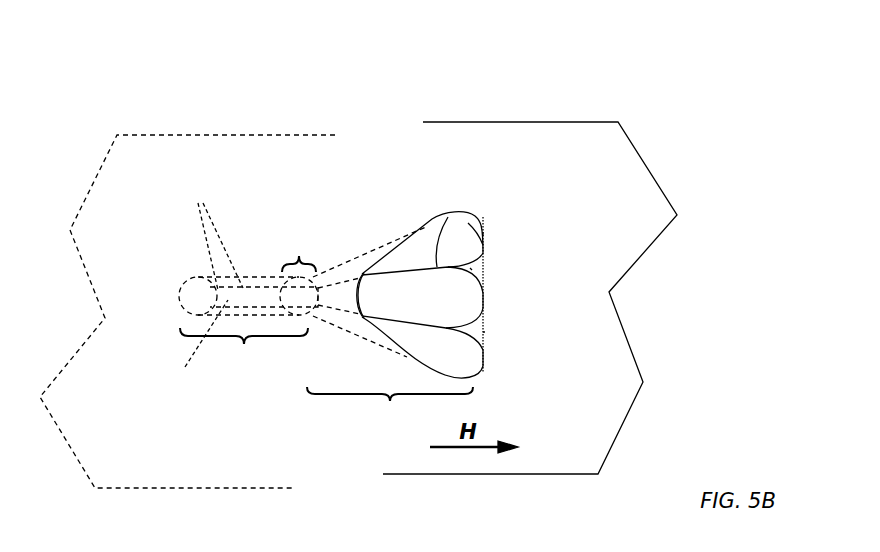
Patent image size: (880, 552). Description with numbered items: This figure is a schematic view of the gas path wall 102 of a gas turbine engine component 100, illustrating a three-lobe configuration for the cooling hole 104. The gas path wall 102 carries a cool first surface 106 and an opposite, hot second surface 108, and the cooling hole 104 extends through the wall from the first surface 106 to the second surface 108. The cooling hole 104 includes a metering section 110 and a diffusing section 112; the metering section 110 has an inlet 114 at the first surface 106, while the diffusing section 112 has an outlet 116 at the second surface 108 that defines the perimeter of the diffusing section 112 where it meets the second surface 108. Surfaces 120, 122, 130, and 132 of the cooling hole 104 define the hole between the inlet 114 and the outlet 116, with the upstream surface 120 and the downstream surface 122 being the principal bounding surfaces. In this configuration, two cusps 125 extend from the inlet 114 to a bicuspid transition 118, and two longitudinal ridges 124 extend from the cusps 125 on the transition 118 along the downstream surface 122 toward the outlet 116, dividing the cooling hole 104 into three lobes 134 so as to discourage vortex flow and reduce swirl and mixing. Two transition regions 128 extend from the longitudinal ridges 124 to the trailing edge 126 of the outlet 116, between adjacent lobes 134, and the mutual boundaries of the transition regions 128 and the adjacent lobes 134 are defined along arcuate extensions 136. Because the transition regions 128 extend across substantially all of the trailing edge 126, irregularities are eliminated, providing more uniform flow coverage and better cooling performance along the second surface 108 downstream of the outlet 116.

The gas turbine engine component 100 is at (103, 92).
The gas path wall 102 is at (318, 465).
The cooling hole 104 is at (218, 406).
The first surface 106 is at (85, 195).
The second surface 108 is at (648, 163).
The metering section 110 is at (244, 324).
The diffusing section 112 is at (395, 323).
The inlet 114 is at (190, 282).
The outlet 116 is at (432, 220).
The transition 118 is at (303, 270).
The upstream surface 120 is at (362, 272).
The downstream surface 122 is at (414, 308).
The longitudinal ridges 124 is at (448, 217).
The cusps 125 is at (211, 234).
The trailing edge 126 is at (483, 232).
The transition regions 128 is at (470, 268).
The cooling hole surface 130 is at (257, 276).
The cooling hole surface 132 is at (190, 347).
The lobes 134 is at (468, 223).
The arcuate extensions 136 is at (483, 332).